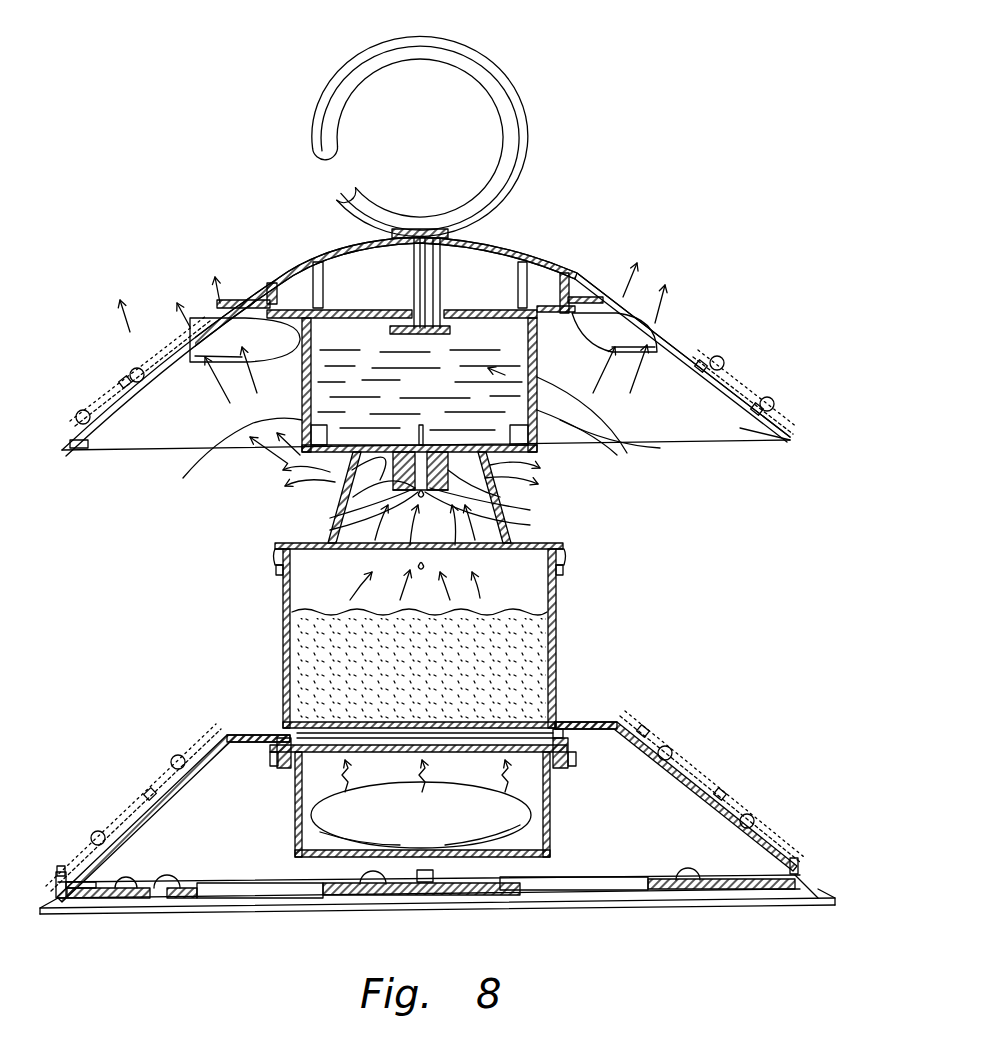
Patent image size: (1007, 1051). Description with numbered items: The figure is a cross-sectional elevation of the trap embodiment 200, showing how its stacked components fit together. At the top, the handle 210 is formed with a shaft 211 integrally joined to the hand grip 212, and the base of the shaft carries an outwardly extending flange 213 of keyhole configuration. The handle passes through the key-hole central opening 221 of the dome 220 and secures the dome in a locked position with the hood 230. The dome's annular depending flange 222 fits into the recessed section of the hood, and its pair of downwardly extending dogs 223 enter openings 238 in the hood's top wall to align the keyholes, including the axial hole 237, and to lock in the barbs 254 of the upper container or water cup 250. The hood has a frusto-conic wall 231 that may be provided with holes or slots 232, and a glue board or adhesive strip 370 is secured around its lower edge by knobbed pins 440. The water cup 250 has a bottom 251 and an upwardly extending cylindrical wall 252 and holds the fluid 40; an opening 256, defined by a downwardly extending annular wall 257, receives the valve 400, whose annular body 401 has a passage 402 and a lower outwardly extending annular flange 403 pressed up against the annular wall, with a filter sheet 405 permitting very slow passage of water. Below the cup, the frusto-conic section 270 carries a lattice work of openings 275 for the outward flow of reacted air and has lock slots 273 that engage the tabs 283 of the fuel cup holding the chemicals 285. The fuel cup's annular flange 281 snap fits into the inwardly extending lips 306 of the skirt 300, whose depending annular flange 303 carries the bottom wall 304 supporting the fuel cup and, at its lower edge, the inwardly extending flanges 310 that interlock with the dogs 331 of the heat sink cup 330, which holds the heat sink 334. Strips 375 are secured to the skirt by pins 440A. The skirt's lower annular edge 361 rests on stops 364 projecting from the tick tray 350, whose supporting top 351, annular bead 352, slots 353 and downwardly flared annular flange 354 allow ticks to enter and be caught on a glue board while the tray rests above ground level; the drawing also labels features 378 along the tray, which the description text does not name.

The embodiment 200 is at (585, 160).
The handle 210 is at (507, 97).
The shaft 211 is at (470, 247).
The hand grip 212 is at (332, 80).
The outwardly extending flange 213 is at (445, 268).
The dome 220 is at (580, 262).
The central opening 221 is at (340, 243).
The annular depending flange 222 is at (268, 290).
The downwardly extending dogs 223 is at (560, 270).
The hood 230 is at (690, 350).
The frusto-conic wall 231 is at (728, 410).
The holes or slots 232 is at (657, 333).
The hole 237 is at (395, 332).
The openings 238 is at (323, 310).
The fluid 40 is at (438, 396).
The upper container or water cup 250 is at (600, 400).
The bottom 251 is at (183, 478).
The cylindrical wall 252 is at (635, 400).
The barbs 254 is at (583, 270).
The opening 256 is at (460, 430).
The annular wall 257 is at (353, 498).
The frusto-conic section 270 is at (530, 510).
The lock slots 273 is at (273, 563).
The lattice work of openings 275 is at (330, 472).
The tabs 283 is at (273, 555).
The chemicals 285 is at (435, 662).
The annular flange 281 is at (567, 748).
The skirt 300 is at (628, 719).
The depending annular flange 303 is at (632, 724).
The bottom wall 304 is at (507, 743).
The inwardly extending lips 306 is at (297, 735).
The inwardly extending flanges 310 is at (283, 778).
The heat sink cup 330 is at (553, 832).
The dogs 331 is at (277, 762).
The heat sink 334 is at (440, 826).
The tick tray 350 is at (747, 905).
The supporting top 351 is at (123, 890).
The annular bead 352 is at (170, 895).
The slots 353 is at (253, 893).
The annular flange 354 is at (820, 892).
The lower annular edge 361 is at (70, 898).
The stops 364 is at (60, 872).
The glue board or adhesive strip 370 is at (150, 370).
The strips 375 is at (193, 752).
The feet 378 is at (160, 889).
The valve 400 is at (530, 525).
The annular body 401 is at (500, 497).
The passage 402 is at (303, 410).
The outwardly extending annular flange 403 is at (330, 518).
The filter sheet 405 is at (330, 530).
The knobbed pins 440 is at (128, 376).
The pins 440A is at (172, 764).